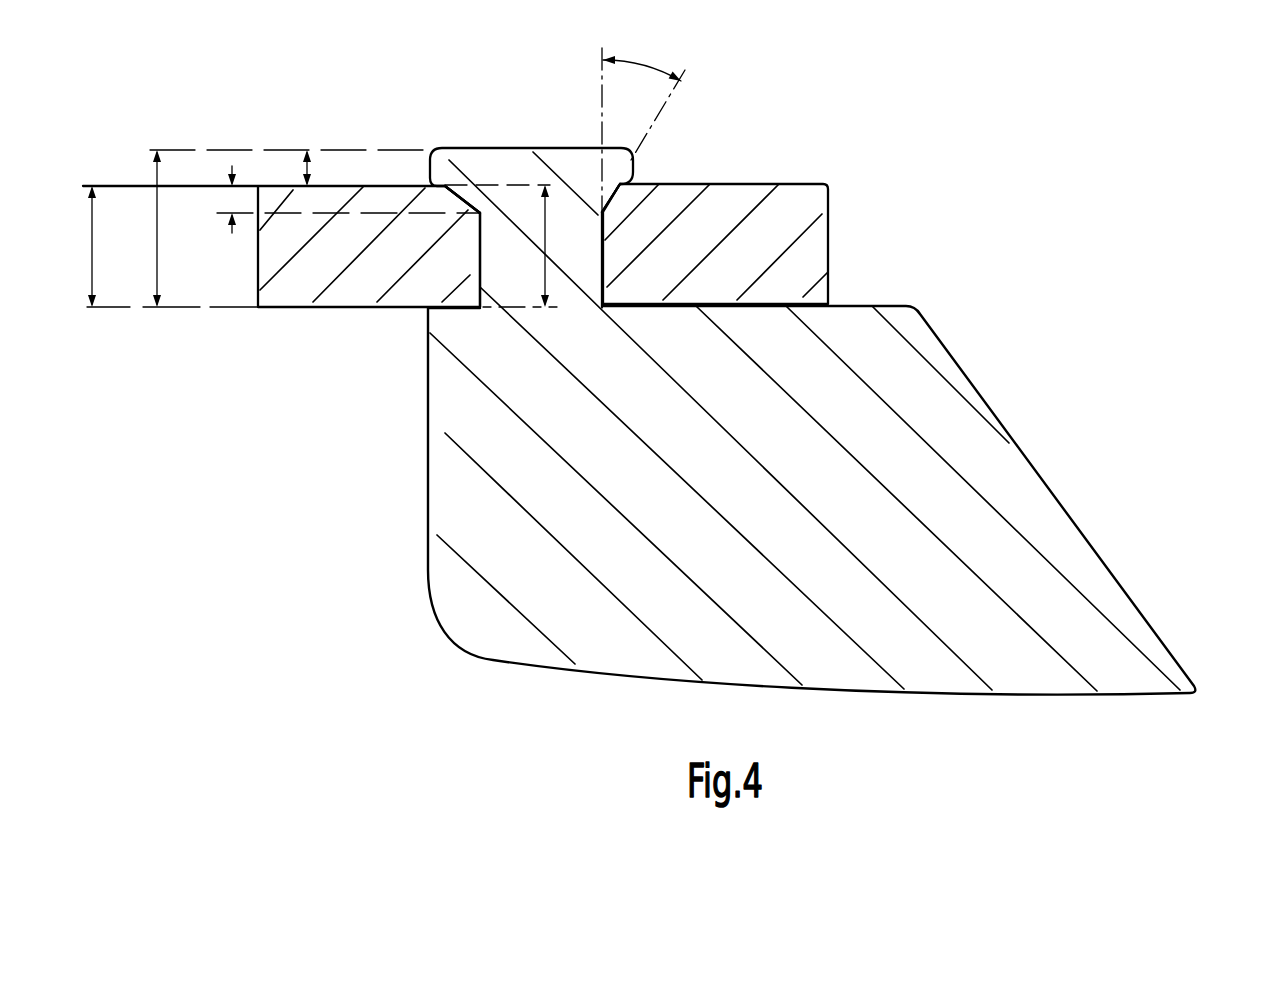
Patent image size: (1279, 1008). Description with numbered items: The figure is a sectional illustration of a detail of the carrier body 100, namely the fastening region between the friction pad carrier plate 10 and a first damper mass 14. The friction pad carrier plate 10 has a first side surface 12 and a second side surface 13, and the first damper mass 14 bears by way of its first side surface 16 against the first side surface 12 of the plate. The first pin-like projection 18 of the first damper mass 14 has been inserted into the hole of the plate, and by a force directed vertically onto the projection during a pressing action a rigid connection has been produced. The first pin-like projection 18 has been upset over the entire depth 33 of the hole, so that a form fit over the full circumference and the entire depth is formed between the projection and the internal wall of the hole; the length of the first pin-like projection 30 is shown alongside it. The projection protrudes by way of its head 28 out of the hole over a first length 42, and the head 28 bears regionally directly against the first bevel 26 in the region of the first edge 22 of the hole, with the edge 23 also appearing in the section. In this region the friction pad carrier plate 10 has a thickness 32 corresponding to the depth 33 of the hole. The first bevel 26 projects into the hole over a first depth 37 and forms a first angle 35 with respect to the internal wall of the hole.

The carrier body 100 is at (1098, 200).
The friction pad carrier plate 10 is at (280, 297).
The first side surface of the friction pad carrier plate 12 is at (717, 300).
The second side surface of the friction pad carrier plate 13 is at (767, 184).
The first damper mass 14 is at (477, 600).
The first side surface of the first damper mass 16 is at (863, 305).
The first pin-like projection 18 is at (403, 302).
The first edge of the first hole 22 is at (440, 184).
The second edge of the second hole 23 is at (481, 309).
The first bevel 26 is at (462, 200).
The head of the first pin-like projection 28 is at (489, 168).
The length of the first pin-like projection 30 is at (157, 262).
The thickness of the friction pad carrier plate 32 is at (92, 233).
The depth of the first hole 33 is at (620, 197).
The first angle 35 is at (643, 62).
The first depth 37 is at (232, 212).
The first length 42 is at (307, 185).